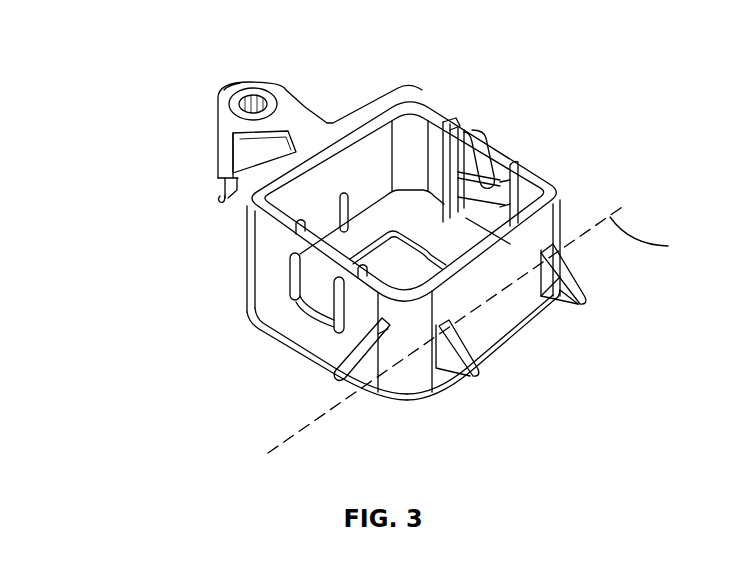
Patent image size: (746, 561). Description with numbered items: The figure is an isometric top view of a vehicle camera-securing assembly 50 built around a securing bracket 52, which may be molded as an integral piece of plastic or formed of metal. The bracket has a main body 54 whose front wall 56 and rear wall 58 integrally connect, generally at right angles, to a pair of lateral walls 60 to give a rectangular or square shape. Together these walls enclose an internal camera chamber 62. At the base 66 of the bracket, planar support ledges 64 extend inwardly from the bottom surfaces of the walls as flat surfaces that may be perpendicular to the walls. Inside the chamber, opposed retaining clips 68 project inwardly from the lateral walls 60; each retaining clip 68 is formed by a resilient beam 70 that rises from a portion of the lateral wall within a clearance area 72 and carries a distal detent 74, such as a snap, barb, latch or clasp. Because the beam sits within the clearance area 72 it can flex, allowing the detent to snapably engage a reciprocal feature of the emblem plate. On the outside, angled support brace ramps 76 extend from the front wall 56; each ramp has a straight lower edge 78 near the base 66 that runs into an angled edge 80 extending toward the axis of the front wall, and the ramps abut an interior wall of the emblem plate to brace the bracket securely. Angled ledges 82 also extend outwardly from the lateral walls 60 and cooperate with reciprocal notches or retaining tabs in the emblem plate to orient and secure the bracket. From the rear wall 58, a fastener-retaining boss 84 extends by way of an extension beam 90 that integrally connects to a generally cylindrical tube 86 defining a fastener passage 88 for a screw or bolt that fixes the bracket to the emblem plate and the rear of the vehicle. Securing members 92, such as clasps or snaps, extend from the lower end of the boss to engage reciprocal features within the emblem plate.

The vehicle camera-securing assembly 50 is at (110, 131).
The securing bracket 52 is at (506, 124).
The main body 54 is at (562, 203).
The front wall 56 is at (507, 313).
The rear wall 58 is at (253, 183).
The lateral walls 60 is at (528, 141).
The internal camera chamber 62 is at (415, 160).
The planar support ledges 64 is at (390, 193).
The base 66 is at (333, 366).
The retaining clips 68 is at (466, 178).
The resilient beam 70 is at (490, 180).
The clearance area 72 is at (290, 291).
The distal detent 74 is at (520, 170).
The angled support brace ramps 76 is at (588, 290).
The straight lower edge 78 is at (583, 305).
The angled edge 80 is at (577, 268).
The angled ledges 82 is at (353, 374).
The fastener-retaining boss 84 is at (218, 147).
The cylindrical tube 86 is at (220, 90).
The fastener passage 88 is at (253, 102).
The extension beam 90 is at (288, 160).
The securing members 92 is at (226, 201).